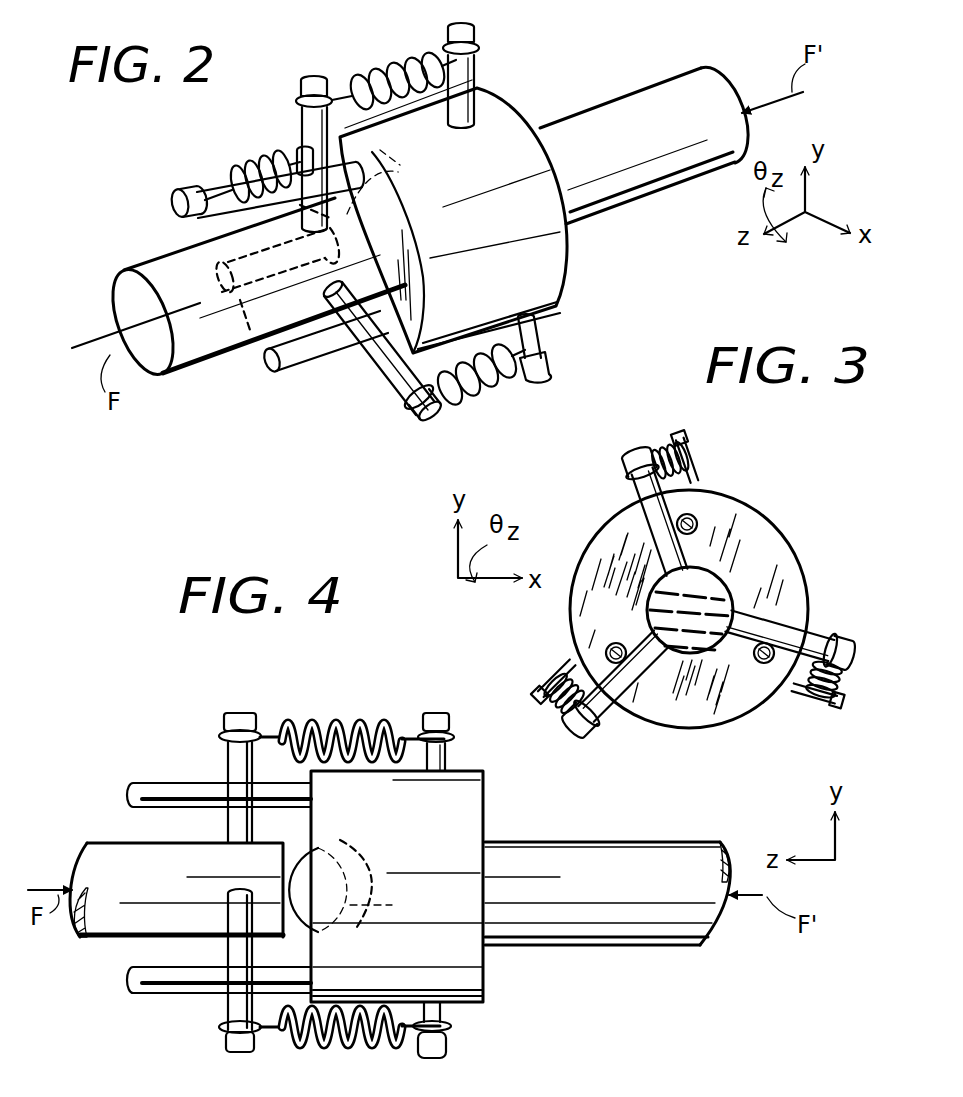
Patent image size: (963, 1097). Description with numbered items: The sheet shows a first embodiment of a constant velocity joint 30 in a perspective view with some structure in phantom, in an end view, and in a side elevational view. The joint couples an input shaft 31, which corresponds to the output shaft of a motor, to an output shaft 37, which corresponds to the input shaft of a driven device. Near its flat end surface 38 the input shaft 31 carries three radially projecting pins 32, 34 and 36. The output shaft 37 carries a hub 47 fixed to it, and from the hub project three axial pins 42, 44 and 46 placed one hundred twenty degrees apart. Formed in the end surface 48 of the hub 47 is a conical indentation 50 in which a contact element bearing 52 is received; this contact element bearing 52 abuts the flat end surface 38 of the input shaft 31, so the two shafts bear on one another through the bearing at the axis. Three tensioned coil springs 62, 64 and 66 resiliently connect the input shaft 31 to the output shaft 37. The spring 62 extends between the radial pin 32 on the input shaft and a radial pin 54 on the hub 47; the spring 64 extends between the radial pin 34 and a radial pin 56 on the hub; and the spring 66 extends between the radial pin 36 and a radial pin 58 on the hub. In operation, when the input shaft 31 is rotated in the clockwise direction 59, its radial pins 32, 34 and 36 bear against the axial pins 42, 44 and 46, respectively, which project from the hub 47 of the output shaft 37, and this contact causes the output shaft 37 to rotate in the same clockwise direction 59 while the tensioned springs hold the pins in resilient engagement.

In FIG. 2, the constant velocity joint 30 is at (583, 345).
In FIG. 2, the input shaft 31 is at (193, 332).
In FIG. 4, the input shaft 31 is at (107, 920).
In FIG. 2, the radial pin 32 is at (383, 378).
In FIG. 3, the radial pin 32 is at (826, 632).
In FIG. 4, the radial pin 32 is at (228, 1037).
In FIG. 2, the radial pin 34 is at (302, 78).
In FIG. 3, the radial pin 34 is at (630, 455).
In FIG. 4, the radial pin 34 is at (228, 712).
In FIG. 2, the radial pin 36 is at (178, 198).
In FIG. 3, the radial pin 36 is at (612, 708).
In FIG. 2, the output shaft 37 is at (632, 195).
In FIG. 4, the output shaft 37 is at (708, 945).
In FIG. 2, the end surface 38 is at (395, 203).
In FIG. 4, the end surface 38 is at (309, 840).
In FIG. 2, the axial pin 42 is at (300, 372).
In FIG. 3, the axial pin 42 is at (762, 665).
In FIG. 4, the axial pin 42 is at (132, 978).
In FIG. 2, the axial pin 44 is at (260, 152).
In FIG. 3, the axial pin 44 is at (700, 522).
In FIG. 4, the axial pin 44 is at (133, 790).
In FIG. 2, the axial pin 46 is at (240, 340).
In FIG. 3, the axial pin 46 is at (600, 650).
In FIG. 2, the hub 47 is at (560, 268).
In FIG. 3, the hub 47 is at (790, 554).
In FIG. 4, the hub 47 is at (480, 822).
In FIG. 4, the end surface 48 is at (285, 733).
In FIG. 4, the conical indentation 50 is at (368, 866).
In FIG. 4, the contact element bearing 52 is at (388, 907).
In FIG. 2, the radial pin 54 is at (553, 348).
In FIG. 3, the radial pin 54 is at (832, 700).
In FIG. 4, the radial pin 54 is at (447, 1049).
In FIG. 2, the radial pin 56 is at (478, 45).
In FIG. 3, the radial pin 56 is at (700, 480).
In FIG. 4, the radial pin 56 is at (431, 712).
In FIG. 3, the radial pin 58 is at (542, 690).
In FIG. 2, the clockwise direction 59 is at (95, 315).
In FIG. 3, the clockwise direction 59 is at (746, 592).
In FIG. 2, the coil spring 62 is at (497, 385).
In FIG. 3, the coil spring 62 is at (840, 682).
In FIG. 4, the coil spring 62 is at (345, 993).
In FIG. 2, the coil spring 64 is at (378, 70).
In FIG. 3, the coil spring 64 is at (662, 447).
In FIG. 4, the coil spring 64 is at (331, 720).
In FIG. 2, the coil spring 66 is at (236, 170).
In FIG. 3, the coil spring 66 is at (560, 706).